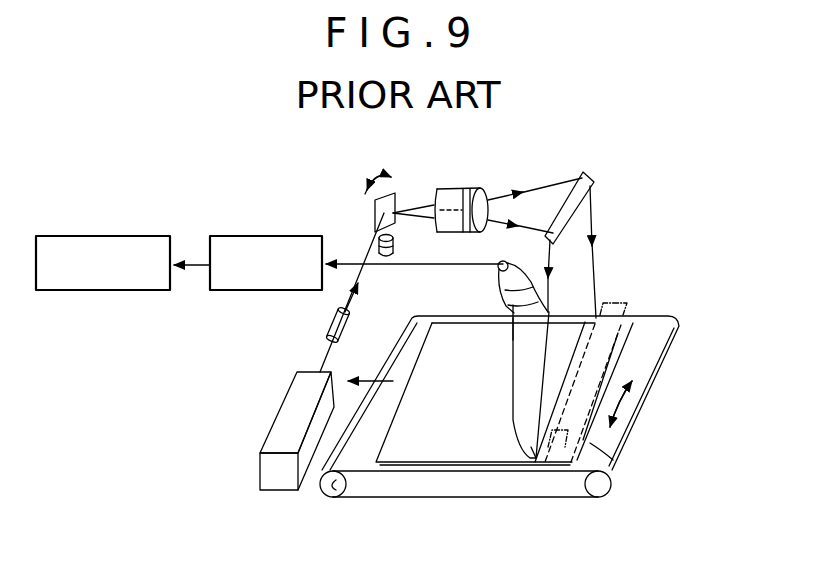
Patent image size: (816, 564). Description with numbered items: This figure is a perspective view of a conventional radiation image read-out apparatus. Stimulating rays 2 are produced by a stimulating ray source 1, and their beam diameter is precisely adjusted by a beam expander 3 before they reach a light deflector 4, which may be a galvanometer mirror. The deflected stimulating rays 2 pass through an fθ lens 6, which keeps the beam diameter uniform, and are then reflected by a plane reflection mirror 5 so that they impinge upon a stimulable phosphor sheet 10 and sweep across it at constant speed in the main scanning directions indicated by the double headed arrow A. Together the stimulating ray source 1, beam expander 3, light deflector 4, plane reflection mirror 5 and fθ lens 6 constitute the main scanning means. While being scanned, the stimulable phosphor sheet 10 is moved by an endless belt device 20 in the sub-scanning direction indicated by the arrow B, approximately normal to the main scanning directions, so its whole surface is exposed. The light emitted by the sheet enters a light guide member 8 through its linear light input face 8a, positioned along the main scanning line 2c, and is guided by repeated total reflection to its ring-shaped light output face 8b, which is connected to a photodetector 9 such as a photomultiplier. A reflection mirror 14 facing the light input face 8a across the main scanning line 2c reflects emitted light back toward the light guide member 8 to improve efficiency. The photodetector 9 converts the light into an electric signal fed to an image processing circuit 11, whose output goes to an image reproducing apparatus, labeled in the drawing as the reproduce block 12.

The stimulating ray source 1 is at (277, 423).
The stimulating rays 2 is at (320, 362).
The main scanning line 2c is at (545, 445).
The beam expander 3 is at (350, 323).
The light deflector 4 is at (396, 194).
The plane reflection mirror 5 is at (594, 180).
The fθ lens 6 is at (460, 190).
The light guide member 8 is at (571, 306).
The light input face 8a is at (531, 447).
The light output face 8b is at (527, 318).
The photodetector 9 is at (503, 296).
The stimulable phosphor sheet 10 is at (616, 469).
The image processing circuit 11 is at (272, 236).
The reproduce unit 12 is at (117, 236).
The reflection mirror 14 is at (628, 320).
The endless belt device 20 is at (654, 430).
The main scanning directions A is at (627, 396).
The sub-scanning direction B is at (375, 378).